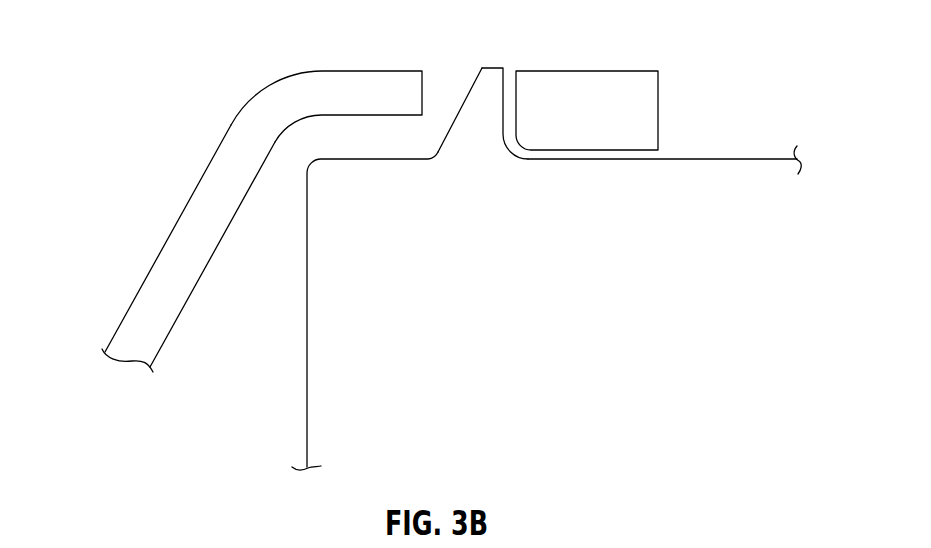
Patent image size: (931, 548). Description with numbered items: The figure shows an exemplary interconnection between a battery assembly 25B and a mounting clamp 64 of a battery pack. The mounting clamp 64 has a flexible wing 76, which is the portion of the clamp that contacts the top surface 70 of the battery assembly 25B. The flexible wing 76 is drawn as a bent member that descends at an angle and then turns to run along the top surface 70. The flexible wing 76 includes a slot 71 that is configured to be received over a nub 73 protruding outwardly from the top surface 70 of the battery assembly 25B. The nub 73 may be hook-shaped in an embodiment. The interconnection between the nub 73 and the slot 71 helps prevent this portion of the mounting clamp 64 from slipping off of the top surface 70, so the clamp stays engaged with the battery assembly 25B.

The mounting clamp 64 is at (243, 74).
The top surface 70 is at (709, 157).
The slot 71 is at (443, 97).
The nub 73 is at (490, 76).
The flexible wing 76 is at (197, 206).
The battery assembly 25B is at (576, 281).